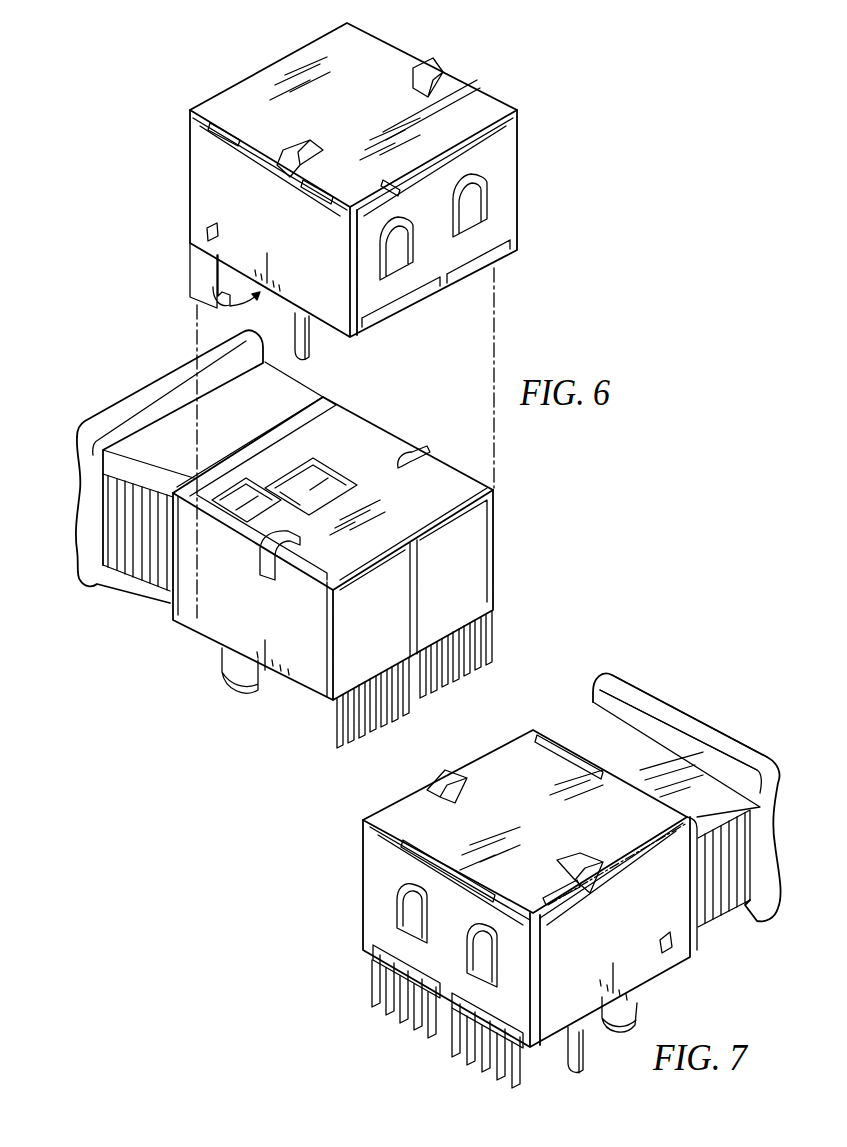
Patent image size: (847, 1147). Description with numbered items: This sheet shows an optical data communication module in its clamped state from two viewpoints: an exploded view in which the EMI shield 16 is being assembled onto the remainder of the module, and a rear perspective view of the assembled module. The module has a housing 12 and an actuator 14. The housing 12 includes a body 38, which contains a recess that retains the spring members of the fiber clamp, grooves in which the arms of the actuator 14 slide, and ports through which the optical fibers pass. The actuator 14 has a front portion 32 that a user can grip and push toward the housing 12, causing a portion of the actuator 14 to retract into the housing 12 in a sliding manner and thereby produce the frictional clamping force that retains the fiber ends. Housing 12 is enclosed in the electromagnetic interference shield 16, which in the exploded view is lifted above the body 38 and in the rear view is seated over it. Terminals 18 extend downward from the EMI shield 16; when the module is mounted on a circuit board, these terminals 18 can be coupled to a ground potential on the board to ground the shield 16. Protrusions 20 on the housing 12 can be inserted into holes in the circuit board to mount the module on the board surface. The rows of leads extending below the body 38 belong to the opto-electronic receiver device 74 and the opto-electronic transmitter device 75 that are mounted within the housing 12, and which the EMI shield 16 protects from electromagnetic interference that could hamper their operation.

In FIG. 7, the housing 12 is at (335, 866).
In FIG. 6, the actuator 14 is at (85, 517).
In FIG. 7, the actuator 14 is at (710, 693).
In FIG. 6, the electromagnetic interference (EMI) shield 16 is at (412, 55).
In FIG. 7, the electromagnetic interference (EMI) shield 16 is at (517, 735).
In FIG. 6, the terminals 18 is at (311, 352).
In FIG. 7, the terminals 18 is at (585, 1070).
In FIG. 6, the protrusions 20 is at (228, 690).
In FIG. 7, the protrusions 20 is at (637, 1025).
In FIG. 7, the front portion 32 is at (742, 742).
In FIG. 6, the body 38 is at (403, 436).
In FIG. 6, the opto-electronic receiver device 74 is at (335, 718).
In FIG. 6, the opto-electronic transmitter device 75 is at (497, 637).